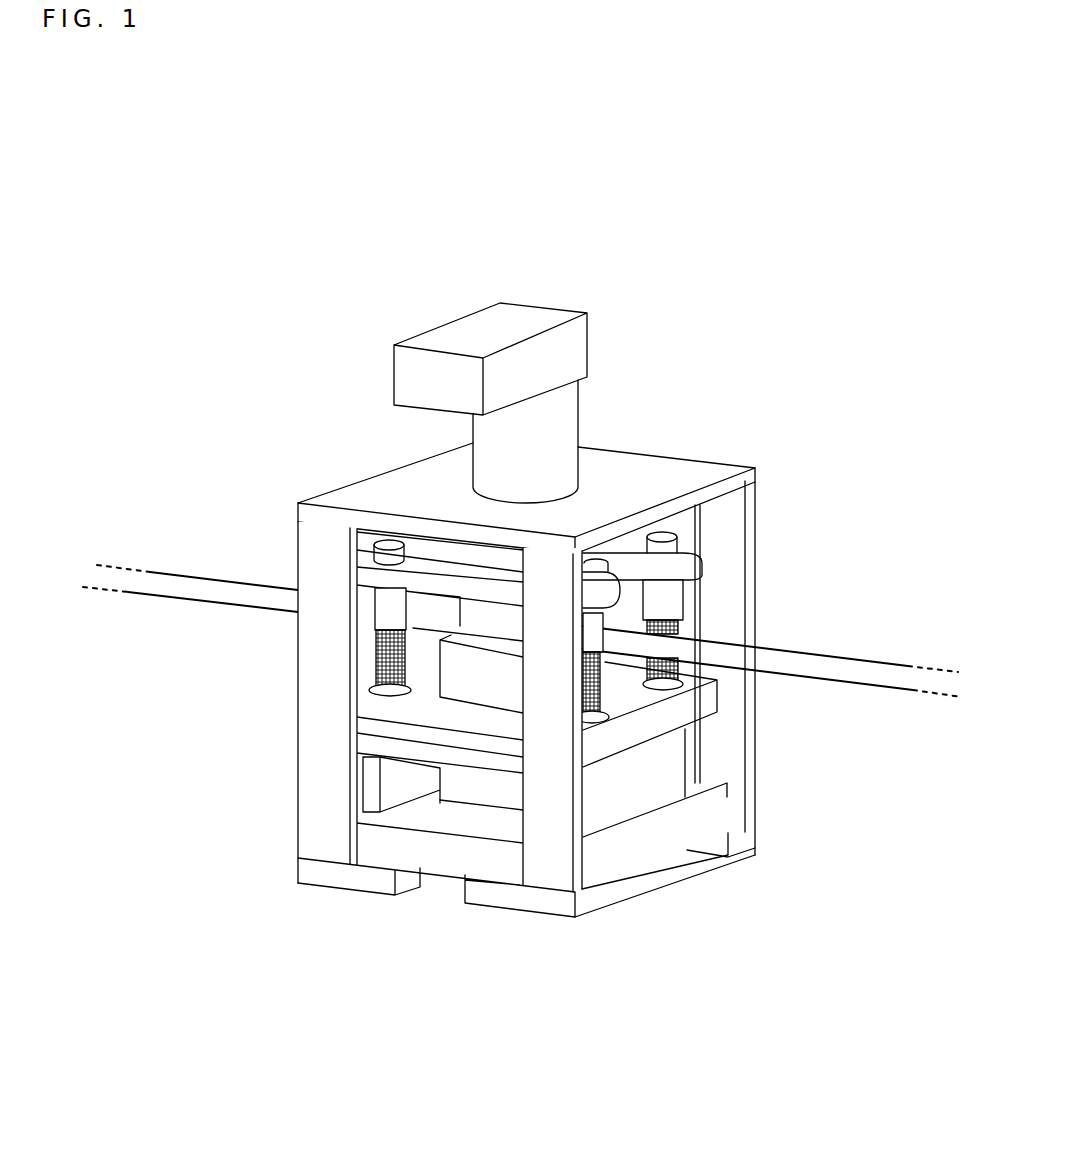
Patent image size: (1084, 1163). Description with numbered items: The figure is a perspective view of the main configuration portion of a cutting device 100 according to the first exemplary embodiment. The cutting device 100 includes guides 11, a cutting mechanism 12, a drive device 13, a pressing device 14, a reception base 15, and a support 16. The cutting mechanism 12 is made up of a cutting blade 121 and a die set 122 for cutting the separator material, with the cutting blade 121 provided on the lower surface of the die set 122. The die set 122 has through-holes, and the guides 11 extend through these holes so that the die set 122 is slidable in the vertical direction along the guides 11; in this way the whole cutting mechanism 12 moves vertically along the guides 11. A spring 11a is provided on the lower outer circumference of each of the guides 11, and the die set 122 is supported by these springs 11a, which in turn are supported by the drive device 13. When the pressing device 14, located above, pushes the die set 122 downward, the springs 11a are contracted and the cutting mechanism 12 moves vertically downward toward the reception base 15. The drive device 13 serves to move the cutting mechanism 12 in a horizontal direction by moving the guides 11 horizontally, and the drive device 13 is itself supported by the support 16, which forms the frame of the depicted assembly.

The cutting device 100 is at (602, 232).
The guides 11 is at (372, 630).
The spring 11a is at (370, 667).
The cutting mechanism 12 is at (250, 435).
The cutting blade 121 is at (458, 608).
The die set 122 is at (467, 565).
The drive device 13 is at (597, 747).
The pressing device 14 is at (578, 408).
The reception base 15 is at (437, 690).
The support 16 is at (757, 522).